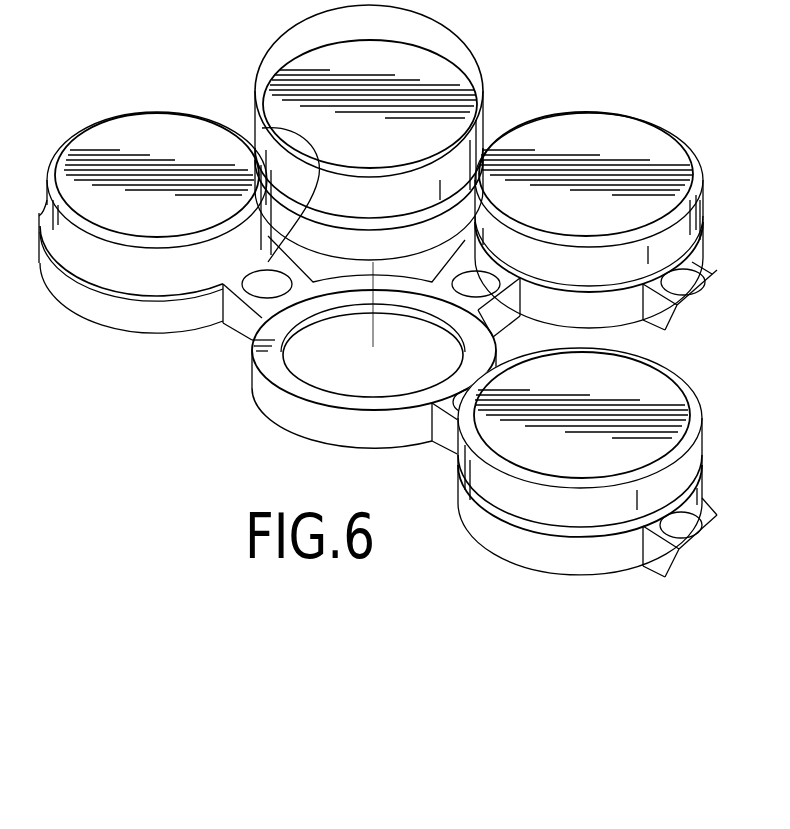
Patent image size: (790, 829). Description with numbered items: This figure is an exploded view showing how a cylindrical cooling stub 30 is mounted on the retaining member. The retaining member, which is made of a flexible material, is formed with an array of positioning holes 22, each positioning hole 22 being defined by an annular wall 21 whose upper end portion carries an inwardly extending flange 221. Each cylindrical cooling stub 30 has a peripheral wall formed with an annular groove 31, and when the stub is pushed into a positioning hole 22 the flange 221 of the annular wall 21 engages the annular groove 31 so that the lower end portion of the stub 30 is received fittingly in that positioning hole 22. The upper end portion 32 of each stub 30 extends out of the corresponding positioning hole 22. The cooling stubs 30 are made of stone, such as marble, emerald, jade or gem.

The annular wall 21 is at (262, 379).
The positioning hole 22 is at (310, 357).
The inwardly extending flange 221 is at (515, 340).
The cylindrical cooling stub 30 is at (302, 251).
The annular groove 31 is at (256, 138).
The upper end portion 32 is at (468, 58).